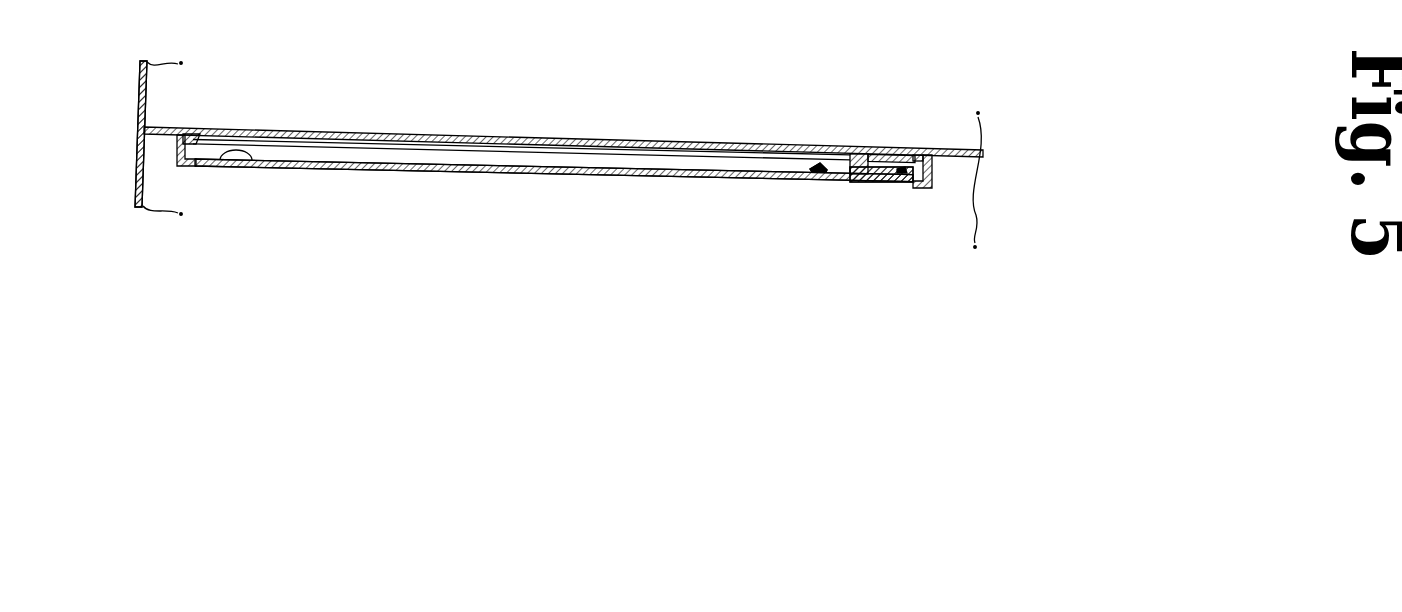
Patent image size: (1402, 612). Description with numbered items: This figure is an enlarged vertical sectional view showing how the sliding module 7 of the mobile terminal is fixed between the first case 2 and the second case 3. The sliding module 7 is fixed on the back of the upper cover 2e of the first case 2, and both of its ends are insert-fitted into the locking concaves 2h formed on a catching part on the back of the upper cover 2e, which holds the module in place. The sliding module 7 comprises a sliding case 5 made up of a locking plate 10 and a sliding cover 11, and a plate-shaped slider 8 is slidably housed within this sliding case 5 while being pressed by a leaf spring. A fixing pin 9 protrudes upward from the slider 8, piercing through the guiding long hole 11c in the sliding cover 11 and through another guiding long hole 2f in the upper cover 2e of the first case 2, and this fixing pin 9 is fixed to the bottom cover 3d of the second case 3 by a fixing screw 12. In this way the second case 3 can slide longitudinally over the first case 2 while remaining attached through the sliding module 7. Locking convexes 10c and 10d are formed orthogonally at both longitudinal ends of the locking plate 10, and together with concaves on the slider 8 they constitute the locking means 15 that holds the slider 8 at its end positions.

The first case 2 is at (132, 187).
The upper cover 2e is at (218, 132).
The guiding long hole 2f is at (667, 142).
The locking concave 2h is at (178, 162).
The second case 3 is at (139, 103).
The bottom cover 3d is at (443, 137).
The sliding case 5 is at (688, 178).
The sliding module 7 is at (636, 178).
The slider 8 is at (830, 182).
The fixing pin 9 is at (840, 150).
The locking plate 10 is at (530, 172).
The locking convex 10c is at (250, 158).
The locking convex 10d is at (900, 182).
The sliding cover 11 is at (903, 152).
The guiding long hole 11c is at (588, 142).
The fixing screw 12 is at (858, 152).
The locking means 15 is at (877, 186).